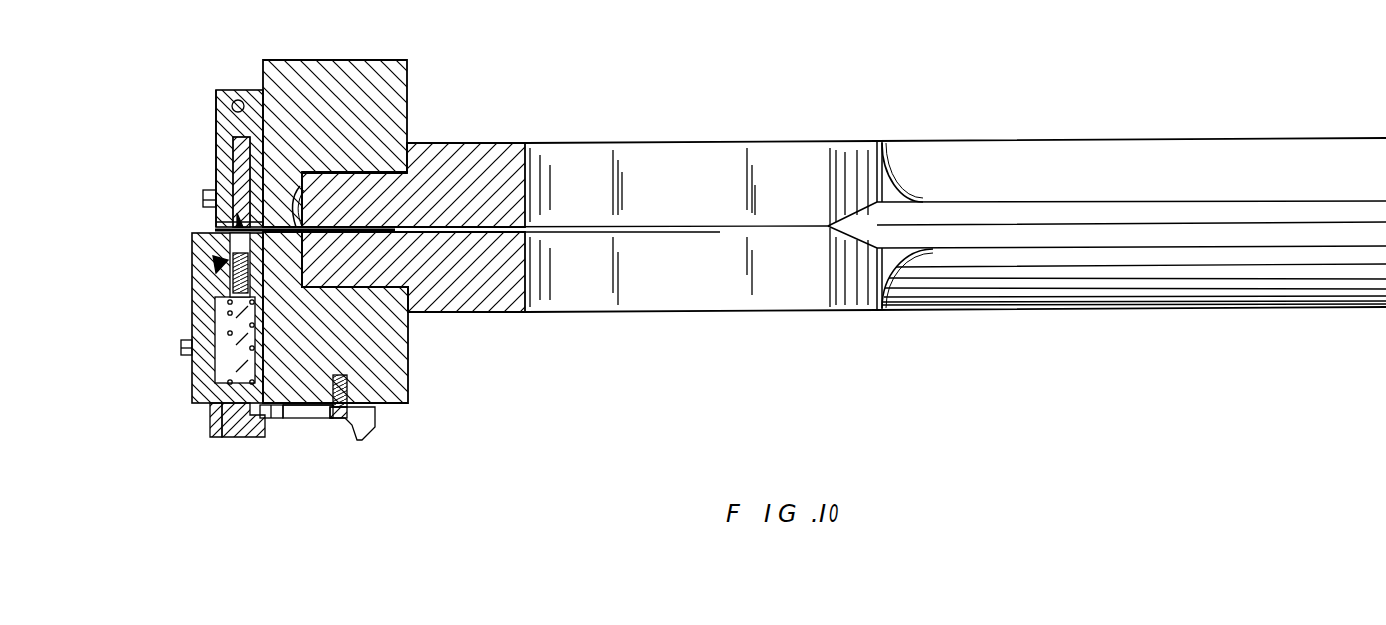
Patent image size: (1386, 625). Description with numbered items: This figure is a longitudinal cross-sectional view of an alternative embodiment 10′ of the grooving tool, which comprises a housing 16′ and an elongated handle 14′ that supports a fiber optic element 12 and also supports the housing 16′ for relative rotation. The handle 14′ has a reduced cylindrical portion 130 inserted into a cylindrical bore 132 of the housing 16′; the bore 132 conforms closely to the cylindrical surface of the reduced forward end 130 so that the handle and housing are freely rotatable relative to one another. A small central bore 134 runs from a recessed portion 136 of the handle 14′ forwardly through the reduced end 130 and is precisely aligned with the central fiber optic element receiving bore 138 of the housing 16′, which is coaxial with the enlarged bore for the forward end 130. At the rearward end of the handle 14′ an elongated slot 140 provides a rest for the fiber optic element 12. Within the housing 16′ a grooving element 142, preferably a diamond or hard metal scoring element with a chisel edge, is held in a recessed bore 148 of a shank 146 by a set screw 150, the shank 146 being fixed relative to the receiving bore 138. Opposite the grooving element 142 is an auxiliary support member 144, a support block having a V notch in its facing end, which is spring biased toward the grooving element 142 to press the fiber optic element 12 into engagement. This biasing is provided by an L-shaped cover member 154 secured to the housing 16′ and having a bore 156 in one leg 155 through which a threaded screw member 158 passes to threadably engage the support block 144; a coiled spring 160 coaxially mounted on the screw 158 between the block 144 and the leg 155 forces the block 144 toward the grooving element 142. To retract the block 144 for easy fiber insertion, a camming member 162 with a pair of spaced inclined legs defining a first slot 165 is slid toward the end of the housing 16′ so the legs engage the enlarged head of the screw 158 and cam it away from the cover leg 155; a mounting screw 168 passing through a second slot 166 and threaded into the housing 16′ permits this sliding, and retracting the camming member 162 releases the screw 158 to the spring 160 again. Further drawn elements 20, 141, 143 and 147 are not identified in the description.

The alternative embodiment 10′ is at (757, 95).
The fiber optic element 12 is at (1072, 225).
The elongated handle 14′ is at (748, 310).
The housing 16′ is at (408, 352).
The threaded set screw 20 is at (227, 258).
The reduced cylindrical portion 130 is at (383, 172).
The cylindrical bore 132 is at (392, 283).
The small central bore 134 is at (538, 213).
The recessed portion 136 is at (578, 285).
The fiber optic element receiving bore 138 is at (300, 186).
The elongated slot 140 is at (978, 205).
The ball detent 141 is at (257, 98).
The grooving element 142 is at (238, 140).
The shim 143 is at (215, 230).
The auxiliary support member 144 is at (213, 263).
The shank 146 is at (223, 118).
The gap 147 is at (217, 226).
The recessed bore 148 is at (233, 160).
The set screw 150 is at (207, 188).
The L-shaped cover member 154 is at (192, 317).
The leg 155 is at (218, 413).
The bore 156 is at (250, 392).
The threaded screw member 158 is at (237, 323).
The coiled spring 160 is at (233, 362).
The camming member 162 is at (373, 436).
The first slot 165 is at (265, 420).
The second slot 166 is at (310, 414).
The mounting screw 168 is at (360, 408).